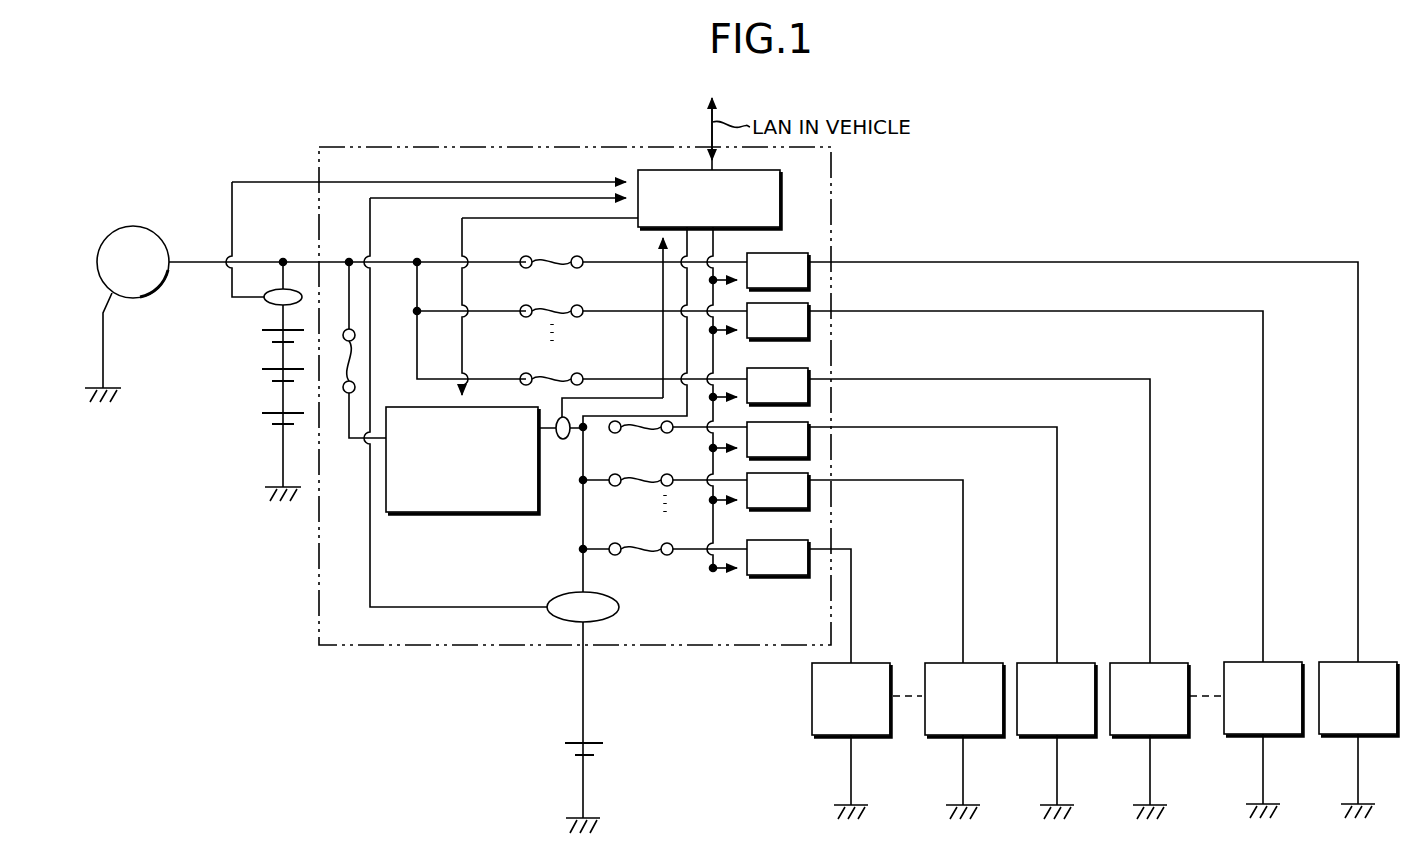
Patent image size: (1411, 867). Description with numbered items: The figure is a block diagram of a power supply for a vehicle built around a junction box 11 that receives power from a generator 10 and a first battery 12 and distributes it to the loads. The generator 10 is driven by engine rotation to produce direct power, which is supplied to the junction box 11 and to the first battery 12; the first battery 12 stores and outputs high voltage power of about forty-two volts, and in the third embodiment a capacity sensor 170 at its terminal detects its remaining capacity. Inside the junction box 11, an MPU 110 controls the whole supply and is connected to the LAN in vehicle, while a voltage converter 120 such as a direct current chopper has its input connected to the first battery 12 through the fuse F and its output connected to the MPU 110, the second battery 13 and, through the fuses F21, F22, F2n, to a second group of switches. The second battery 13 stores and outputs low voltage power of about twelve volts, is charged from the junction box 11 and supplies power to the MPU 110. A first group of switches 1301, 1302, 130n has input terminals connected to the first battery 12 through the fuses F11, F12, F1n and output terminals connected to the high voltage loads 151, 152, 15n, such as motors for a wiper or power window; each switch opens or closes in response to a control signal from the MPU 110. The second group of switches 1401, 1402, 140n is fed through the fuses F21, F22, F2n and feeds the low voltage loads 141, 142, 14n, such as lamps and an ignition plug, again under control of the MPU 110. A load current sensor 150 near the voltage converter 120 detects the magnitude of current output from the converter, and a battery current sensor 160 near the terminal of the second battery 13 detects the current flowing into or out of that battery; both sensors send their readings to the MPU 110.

The generator 10 is at (158, 298).
The junction box 11 is at (537, 152).
The first battery 12 is at (251, 386).
The second battery 13 is at (597, 742).
The low voltage load 14n is at (872, 662).
The low voltage load 142 is at (985, 662).
The low voltage load 141 is at (1077, 662).
The high voltage load 15n is at (1170, 662).
The high voltage load 152 is at (1283, 661).
The high voltage load 151 is at (1378, 661).
The MPU 110 is at (781, 193).
The voltage converter 120 is at (473, 513).
The switch 1301 is at (810, 253).
The switch 1302 is at (810, 303).
The switch 130n is at (810, 368).
The switch 1401 is at (810, 422).
The switch 1402 is at (810, 473).
The switch 140n is at (810, 540).
The load current sensor 150 is at (562, 440).
The battery current sensor 160 is at (619, 614).
The capacity sensor 170 is at (268, 307).
The fuse F is at (337, 378).
The fuse F11 is at (633, 251).
The fuse F12 is at (633, 300).
The fuse F1n is at (633, 368).
The fuse F21 is at (678, 443).
The fuse F22 is at (678, 495).
The fuse F2n is at (678, 564).